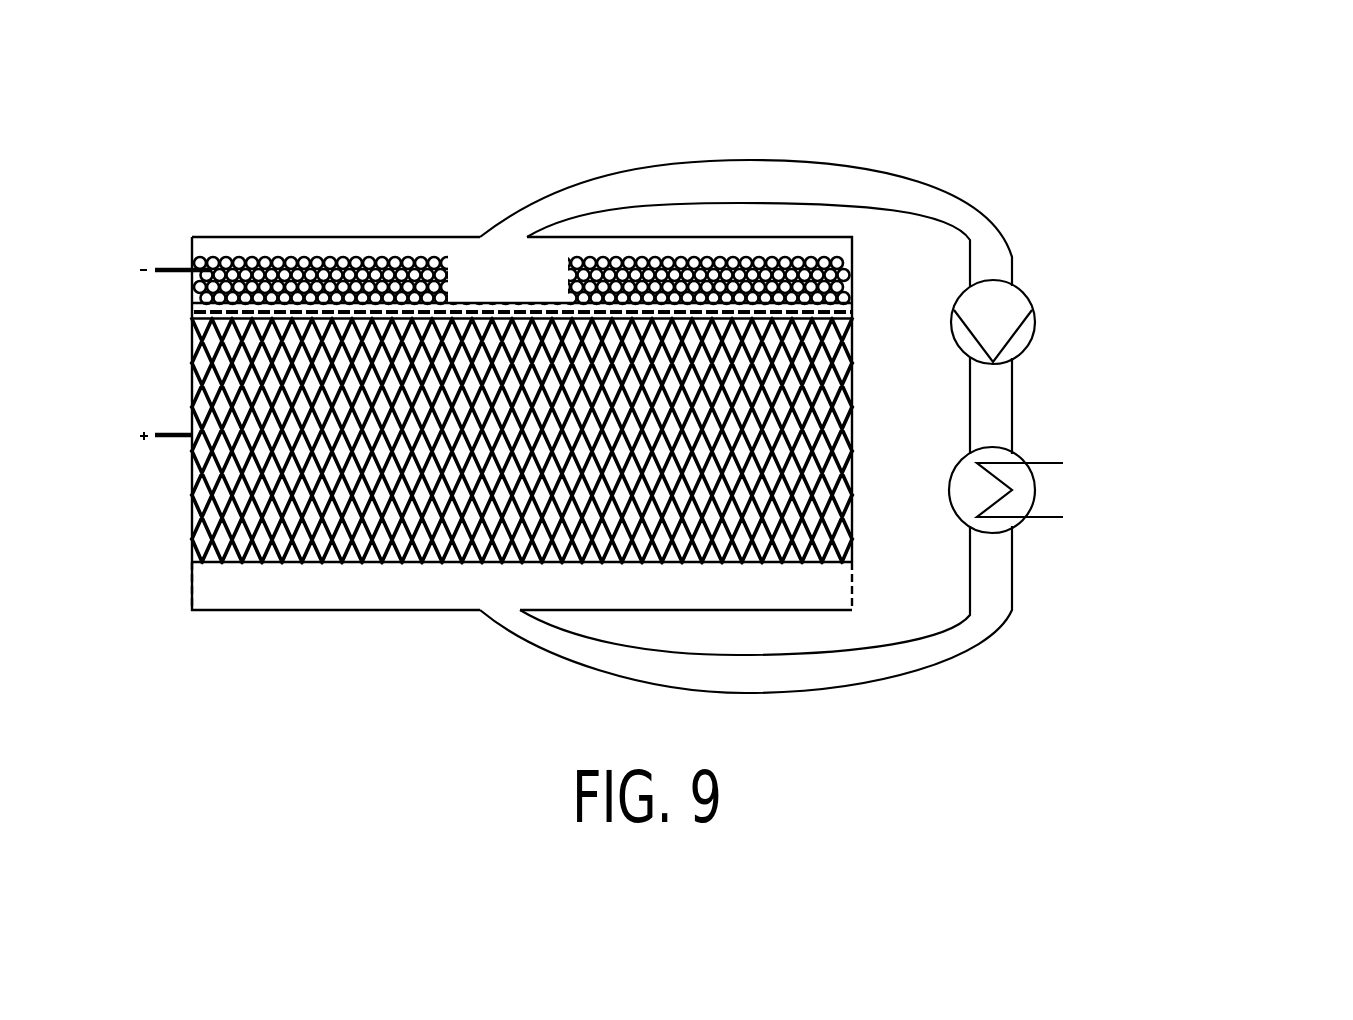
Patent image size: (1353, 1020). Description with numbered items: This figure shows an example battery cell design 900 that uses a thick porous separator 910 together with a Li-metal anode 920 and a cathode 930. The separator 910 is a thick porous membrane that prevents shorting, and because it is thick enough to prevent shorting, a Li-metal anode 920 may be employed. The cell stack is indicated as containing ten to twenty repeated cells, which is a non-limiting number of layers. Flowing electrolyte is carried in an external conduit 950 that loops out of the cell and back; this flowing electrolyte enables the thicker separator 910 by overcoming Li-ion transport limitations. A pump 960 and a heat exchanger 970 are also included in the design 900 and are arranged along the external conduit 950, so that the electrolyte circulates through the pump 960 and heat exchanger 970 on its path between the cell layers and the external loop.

The battery cell design 900 is at (232, 108).
The separator 910 is at (192, 312).
The anode 920 is at (228, 260).
The cathode 930 is at (182, 460).
The external conduit 950 is at (913, 177).
The pump 960 is at (1148, 327).
The heat exchanger 970 is at (1165, 508).